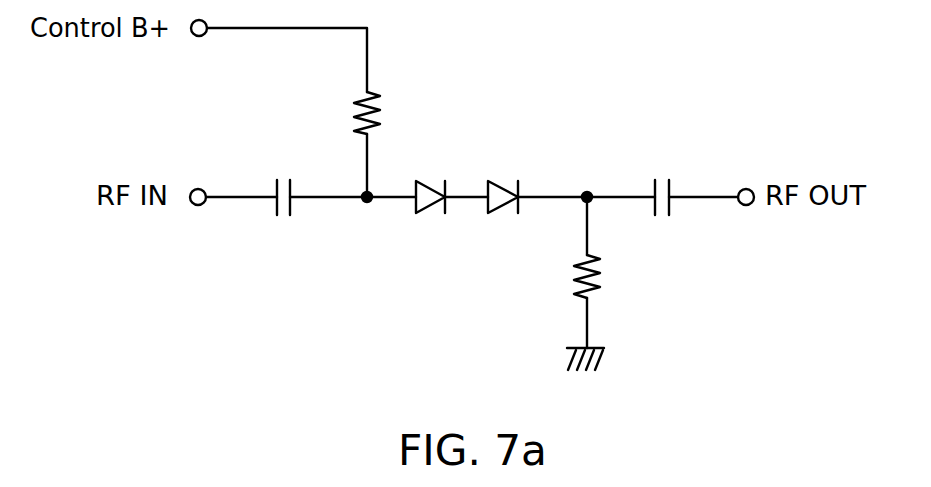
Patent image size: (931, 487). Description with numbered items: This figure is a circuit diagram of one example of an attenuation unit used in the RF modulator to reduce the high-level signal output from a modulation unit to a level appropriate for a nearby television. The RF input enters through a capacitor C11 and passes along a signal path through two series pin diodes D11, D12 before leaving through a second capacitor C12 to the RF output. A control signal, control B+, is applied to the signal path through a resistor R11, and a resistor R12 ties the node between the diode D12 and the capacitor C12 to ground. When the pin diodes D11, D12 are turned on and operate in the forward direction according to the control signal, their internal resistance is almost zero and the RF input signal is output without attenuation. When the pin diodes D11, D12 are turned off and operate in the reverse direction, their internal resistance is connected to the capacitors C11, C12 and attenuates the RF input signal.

The capacitor C11 is at (282, 178).
The capacitor C12 is at (656, 178).
The pin diode D11 is at (433, 177).
The pin diode D12 is at (503, 177).
The control bias resistor R11 is at (395, 113).
The ground return resistor R12 is at (618, 276).